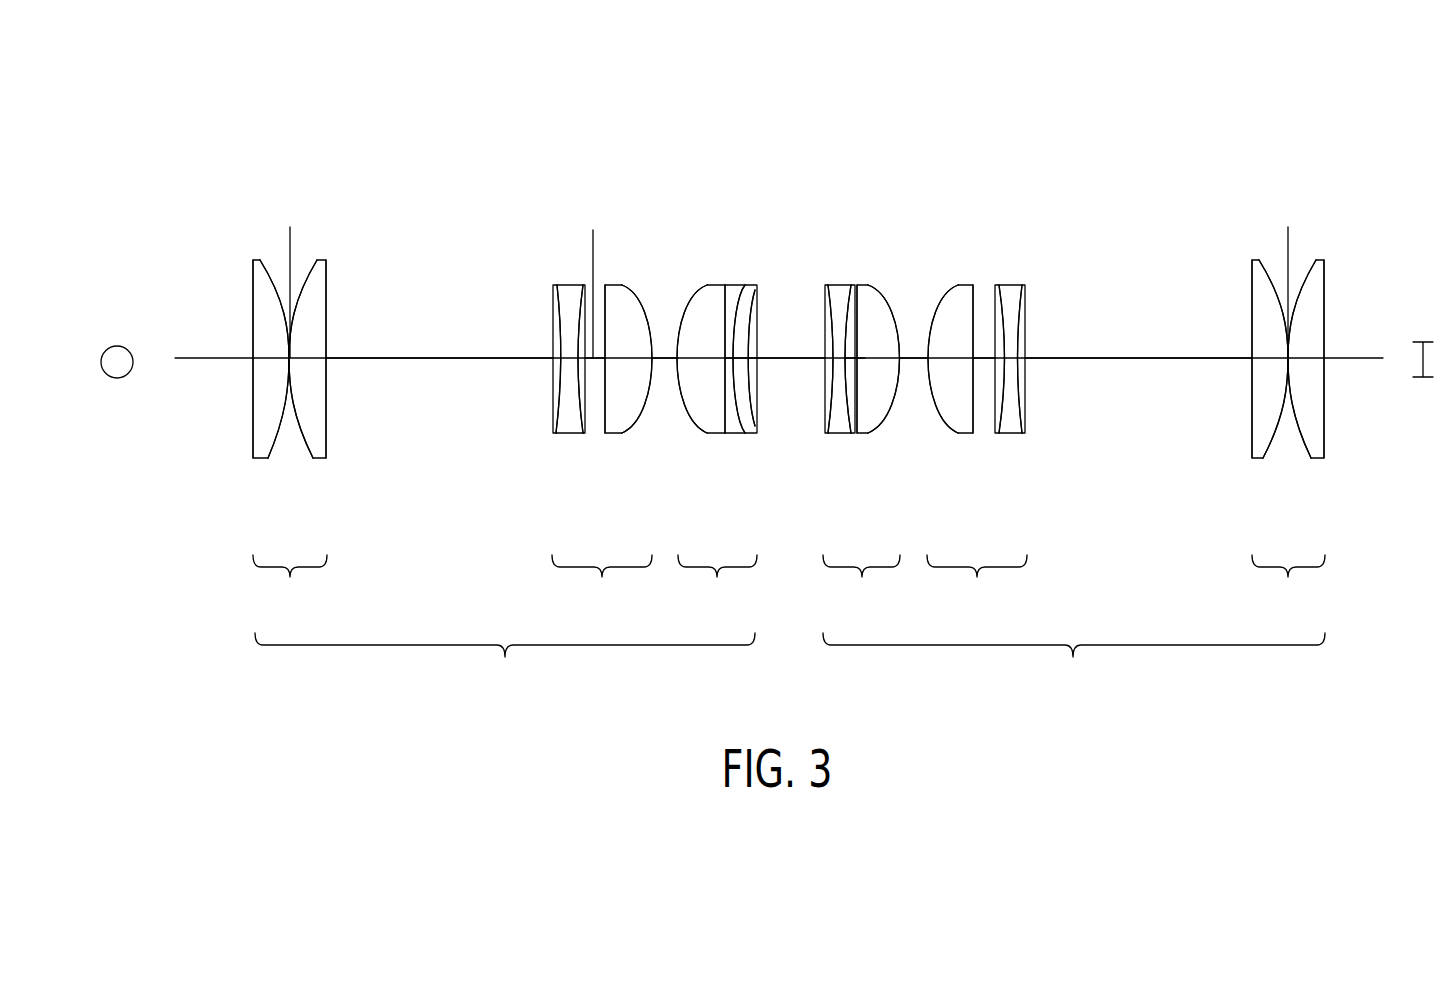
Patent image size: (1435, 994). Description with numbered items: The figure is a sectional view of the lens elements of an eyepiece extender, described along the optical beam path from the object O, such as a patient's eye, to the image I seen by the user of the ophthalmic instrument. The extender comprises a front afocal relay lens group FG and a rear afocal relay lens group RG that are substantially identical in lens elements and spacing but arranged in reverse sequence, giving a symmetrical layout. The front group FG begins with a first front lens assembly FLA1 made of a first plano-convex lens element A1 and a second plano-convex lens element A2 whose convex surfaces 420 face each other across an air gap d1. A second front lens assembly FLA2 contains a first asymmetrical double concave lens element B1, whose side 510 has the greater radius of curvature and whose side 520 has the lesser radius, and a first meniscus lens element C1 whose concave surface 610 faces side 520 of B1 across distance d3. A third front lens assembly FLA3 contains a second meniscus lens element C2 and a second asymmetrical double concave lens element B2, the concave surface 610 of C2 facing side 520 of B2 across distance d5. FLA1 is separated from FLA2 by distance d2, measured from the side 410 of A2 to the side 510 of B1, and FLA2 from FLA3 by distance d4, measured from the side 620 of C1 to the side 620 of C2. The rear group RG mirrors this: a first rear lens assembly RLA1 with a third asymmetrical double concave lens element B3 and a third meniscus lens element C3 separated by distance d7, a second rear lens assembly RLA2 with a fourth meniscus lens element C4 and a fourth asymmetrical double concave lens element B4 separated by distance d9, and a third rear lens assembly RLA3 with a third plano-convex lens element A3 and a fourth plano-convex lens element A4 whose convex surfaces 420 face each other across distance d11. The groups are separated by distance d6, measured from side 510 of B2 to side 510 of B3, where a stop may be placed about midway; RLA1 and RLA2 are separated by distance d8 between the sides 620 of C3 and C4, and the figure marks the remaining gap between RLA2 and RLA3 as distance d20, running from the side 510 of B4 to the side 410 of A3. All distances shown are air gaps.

The side of plano-convex lens element 410 is at (253, 316).
The convex surface of plano-convex lens element 420 is at (277, 280).
The side of asymmetrical double concave lens element having greater radius of curvat 510 is at (558, 318).
The side of asymmetrical double concave lens element having lesser radius of curvatu 520 is at (580, 310).
The concave surface of meniscus lens element 610 is at (607, 285).
The side of meniscus lens element 620 is at (630, 305).
The first plano-convex lens element A1 is at (266, 452).
The second plano-convex lens element A2 is at (318, 452).
The third plano-convex lens element A3 is at (1263, 452).
The fourth plano-convex lens element A4 is at (1315, 452).
The first asymmetrical double concave lens element B1 is at (565, 420).
The second asymmetrical double concave lens element B2 is at (745, 420).
The third asymmetrical double concave lens element B3 is at (840, 422).
The fourth asymmetrical double concave lens element B4 is at (1013, 422).
The first meniscus lens element C1 is at (620, 420).
The second meniscus lens element C2 is at (713, 420).
The third meniscus lens element C3 is at (872, 422).
The fourth meniscus lens element C4 is at (968, 422).
The distance d1 is at (290, 227).
The distance d2 is at (433, 358).
The distance d3 is at (593, 230).
The distance d4 is at (660, 358).
The distance d5 is at (735, 358).
The distance d6 is at (782, 358).
The distance d7 is at (849, 358).
The distance d8 is at (908, 358).
The distance d9 is at (980, 358).
The distance d11 is at (1288, 227).
The air gap distance d20 is at (1130, 358).
The first front lens assembly FLA1 is at (281, 350).
The second front lens assembly FLA2 is at (594, 350).
The third front lens assembly FLA3 is at (719, 416).
The first rear lens assembly RLA1 is at (856, 416).
The second rear lens assembly RLA2 is at (977, 385).
The third rear lens assembly RLA3 is at (1281, 350).
The front afocal relay lens group FG is at (499, 390).
The rear afocal relay lens group RG is at (1070, 390).
The object O is at (117, 362).
The image I is at (1423, 359).